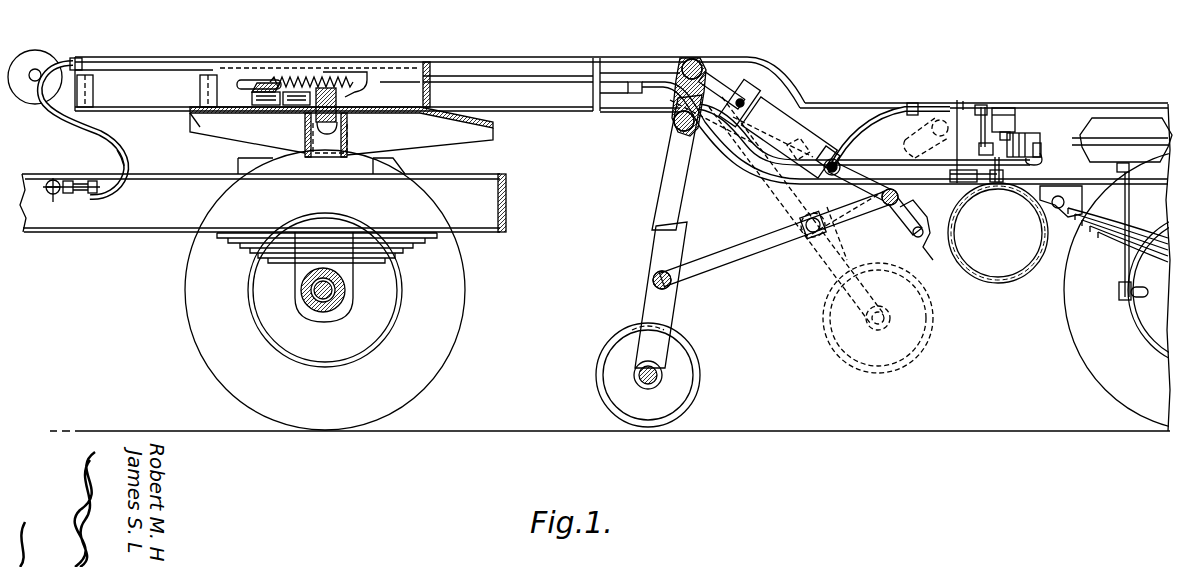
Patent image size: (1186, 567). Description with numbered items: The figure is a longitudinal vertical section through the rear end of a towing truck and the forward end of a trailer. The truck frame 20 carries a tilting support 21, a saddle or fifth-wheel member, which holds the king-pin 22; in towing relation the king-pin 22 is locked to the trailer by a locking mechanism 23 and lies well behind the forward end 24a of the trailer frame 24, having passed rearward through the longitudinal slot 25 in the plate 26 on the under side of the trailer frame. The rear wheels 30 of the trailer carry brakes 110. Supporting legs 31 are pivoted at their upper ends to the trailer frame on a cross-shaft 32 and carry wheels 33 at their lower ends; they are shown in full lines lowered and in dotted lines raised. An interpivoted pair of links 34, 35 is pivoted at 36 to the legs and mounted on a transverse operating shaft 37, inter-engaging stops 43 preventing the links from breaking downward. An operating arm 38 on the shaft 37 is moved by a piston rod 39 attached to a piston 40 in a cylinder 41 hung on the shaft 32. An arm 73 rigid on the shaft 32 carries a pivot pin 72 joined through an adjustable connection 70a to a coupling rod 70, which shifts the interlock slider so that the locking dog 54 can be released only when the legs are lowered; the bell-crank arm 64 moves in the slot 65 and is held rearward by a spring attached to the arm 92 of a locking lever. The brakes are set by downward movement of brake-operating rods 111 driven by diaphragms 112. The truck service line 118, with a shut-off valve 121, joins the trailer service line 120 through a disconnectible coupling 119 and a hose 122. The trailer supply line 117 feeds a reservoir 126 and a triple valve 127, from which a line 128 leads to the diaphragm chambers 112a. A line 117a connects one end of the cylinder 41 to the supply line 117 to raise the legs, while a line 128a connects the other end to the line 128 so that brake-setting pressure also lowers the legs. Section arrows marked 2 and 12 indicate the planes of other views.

The truck frame 20 is at (163, 235).
The tilting support 21 is at (250, 130).
The king-pin 22 is at (348, 122).
The locking mechanism 23 is at (312, 71).
The trailer frame 24 is at (536, 55).
The forward end of trailer frame 24a is at (68, 92).
The longitudinal slot 25 is at (150, 107).
The plate 26 is at (410, 102).
The rear wheels 30 is at (1103, 378).
The supporting legs 31 is at (668, 191).
The cross-shaft 32 is at (693, 58).
The wheels 33 is at (686, 370).
The link 34 is at (749, 252).
The link 35 is at (909, 133).
The pivot 36 is at (652, 280).
The transverse operating shaft 37 is at (906, 195).
The operating arm 38 is at (930, 242).
The piston rod 39 is at (912, 236).
The piston 40 is at (800, 113).
The cylinder 41 is at (776, 109).
The inter-engaging stops 43 is at (798, 209).
The locking dog 54 is at (308, 115).
The arm of bell crank lever 64 is at (275, 82).
The longitudinal slot 65 is at (245, 79).
The coupling rod 70 is at (490, 80).
The adjustable connection 70a is at (678, 41).
The pivot pin 72 is at (673, 122).
The arm 73 is at (709, 86).
The arm of locking lever 92 is at (377, 82).
The brakes 110 is at (1072, 342).
The brake-operating rods 111 is at (1130, 208).
The diaphragms 112 is at (1142, 140).
The diaphragm chambers 112a is at (1120, 118).
The pressure supply line 117 is at (955, 150).
The line 117a is at (836, 159).
The service line 118 is at (45, 160).
The disconnectible coupling 119 is at (81, 196).
The service line 120 is at (123, 62).
The shut-off valve 121 is at (62, 201).
The hose 122 is at (128, 162).
The reservoir 126 is at (990, 286).
The triple valve 127 is at (1021, 135).
The line 128 is at (1058, 100).
The line 128a is at (955, 100).
The section line 2 is at (177, 73).
The section line 12 is at (445, 75).